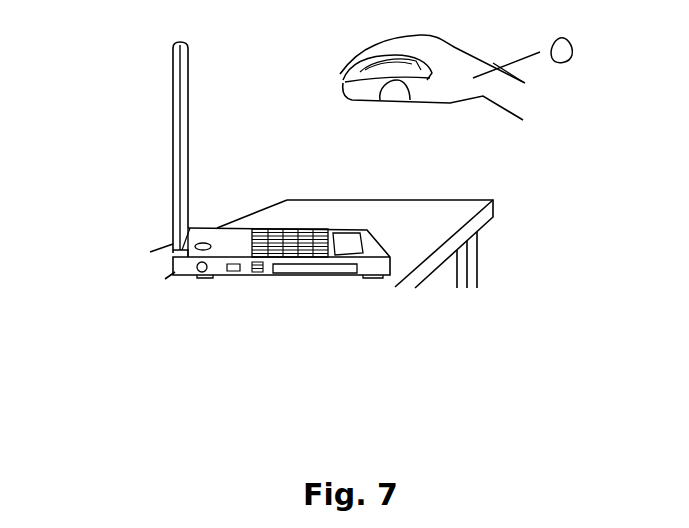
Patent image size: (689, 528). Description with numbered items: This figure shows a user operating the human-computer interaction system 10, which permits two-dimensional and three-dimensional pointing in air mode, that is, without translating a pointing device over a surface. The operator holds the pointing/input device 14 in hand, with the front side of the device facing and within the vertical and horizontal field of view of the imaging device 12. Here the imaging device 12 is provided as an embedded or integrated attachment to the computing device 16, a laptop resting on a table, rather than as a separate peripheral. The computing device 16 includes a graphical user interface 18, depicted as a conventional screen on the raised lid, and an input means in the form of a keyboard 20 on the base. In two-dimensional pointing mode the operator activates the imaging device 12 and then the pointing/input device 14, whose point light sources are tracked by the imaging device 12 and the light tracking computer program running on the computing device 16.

The human-computer interaction system 10 is at (217, 164).
The imaging device 12 is at (187, 43).
The pointing/input device 14 is at (345, 88).
The computing device 16 is at (231, 226).
The graphical user interface 18 is at (187, 150).
The keyboard 20 is at (293, 227).